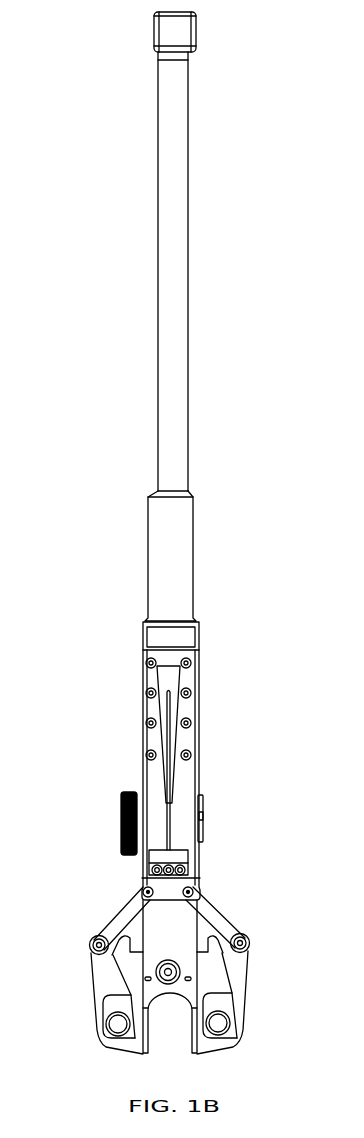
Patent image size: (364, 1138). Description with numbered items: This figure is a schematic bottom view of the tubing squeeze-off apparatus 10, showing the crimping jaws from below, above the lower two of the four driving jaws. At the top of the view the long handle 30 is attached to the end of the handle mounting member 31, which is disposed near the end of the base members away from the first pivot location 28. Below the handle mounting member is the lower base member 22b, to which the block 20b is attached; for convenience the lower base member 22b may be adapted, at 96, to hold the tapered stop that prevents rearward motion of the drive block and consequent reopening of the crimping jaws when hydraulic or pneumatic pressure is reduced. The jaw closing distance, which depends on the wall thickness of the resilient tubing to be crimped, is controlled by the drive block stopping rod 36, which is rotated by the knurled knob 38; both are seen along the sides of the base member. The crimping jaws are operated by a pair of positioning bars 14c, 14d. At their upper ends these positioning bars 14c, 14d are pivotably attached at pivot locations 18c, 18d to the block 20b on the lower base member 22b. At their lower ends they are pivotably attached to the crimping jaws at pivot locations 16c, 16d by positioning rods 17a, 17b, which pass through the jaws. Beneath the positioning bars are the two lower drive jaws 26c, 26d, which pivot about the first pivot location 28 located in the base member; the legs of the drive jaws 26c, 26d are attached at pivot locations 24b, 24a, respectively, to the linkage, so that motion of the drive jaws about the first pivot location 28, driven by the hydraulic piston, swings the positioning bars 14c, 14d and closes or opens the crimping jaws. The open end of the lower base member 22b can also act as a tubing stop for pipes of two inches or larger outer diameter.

The squeeze-off apparatus 10 is at (222, 661).
The handle 30 is at (213, 251).
The handle mounting member 31 is at (183, 565).
The adaptation of lower base member 96 is at (234, 748).
The lower base member 22b is at (105, 737).
The knurled knob 38 is at (81, 819).
The drive block stopping rod 36 is at (255, 787).
The block 20b is at (104, 852).
The pivot location 18c is at (86, 875).
The pivot location 18d is at (254, 846).
The positioning bar 14c is at (79, 914).
The positioning bar 14d is at (256, 897).
The pivot location 16c is at (58, 931).
The pivot location 16d is at (278, 918).
The positioning rod 17b is at (56, 951).
The positioning rod 17a is at (281, 949).
The drive jaw 26c is at (76, 995).
The drive jaw 26d is at (263, 995).
The pivot location 24b is at (71, 1041).
The pivot location 24a is at (269, 1022).
The first pivot location 28 is at (104, 1007).